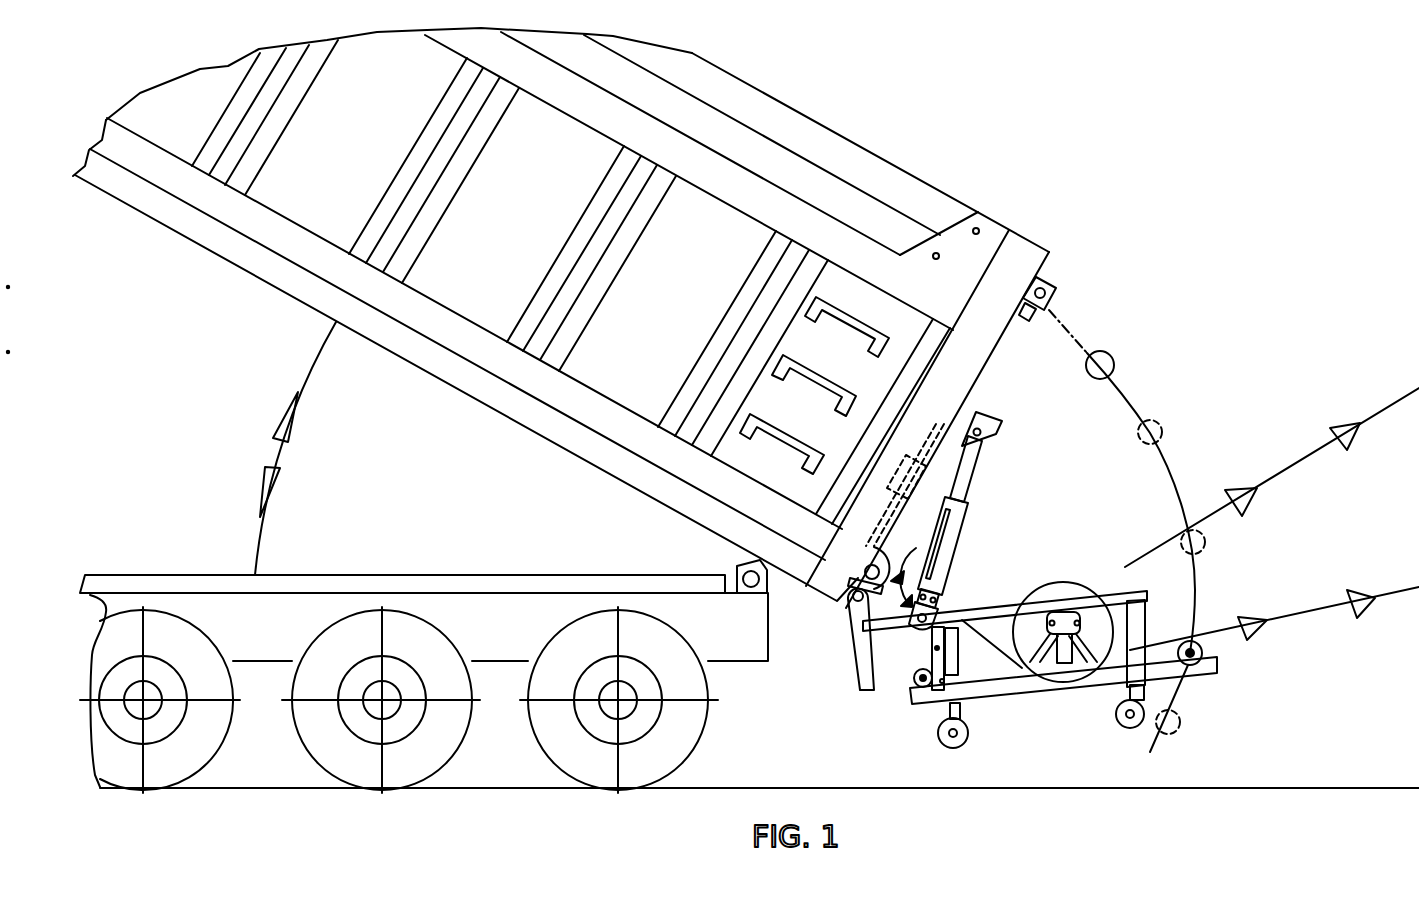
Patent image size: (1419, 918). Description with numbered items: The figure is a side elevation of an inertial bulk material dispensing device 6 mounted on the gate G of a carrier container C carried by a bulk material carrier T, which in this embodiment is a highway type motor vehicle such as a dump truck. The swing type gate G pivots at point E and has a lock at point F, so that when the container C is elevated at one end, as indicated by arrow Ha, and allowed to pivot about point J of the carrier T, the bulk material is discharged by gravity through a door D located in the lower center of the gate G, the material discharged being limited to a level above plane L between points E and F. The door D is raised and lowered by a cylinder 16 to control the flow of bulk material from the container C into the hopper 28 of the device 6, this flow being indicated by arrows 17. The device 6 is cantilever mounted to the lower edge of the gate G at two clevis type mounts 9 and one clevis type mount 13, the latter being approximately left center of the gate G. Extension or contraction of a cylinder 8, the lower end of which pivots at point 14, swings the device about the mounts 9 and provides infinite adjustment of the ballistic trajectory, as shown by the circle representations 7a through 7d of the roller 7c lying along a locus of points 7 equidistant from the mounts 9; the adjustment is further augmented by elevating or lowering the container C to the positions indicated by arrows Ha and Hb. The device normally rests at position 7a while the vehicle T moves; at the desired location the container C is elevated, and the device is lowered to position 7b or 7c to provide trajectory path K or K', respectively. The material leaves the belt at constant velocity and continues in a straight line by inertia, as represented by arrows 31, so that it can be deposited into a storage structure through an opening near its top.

The inertial bulk material dispensing device 6 is at (1014, 604).
The roller position circle representations 7 is at (1123, 531).
The roller position 7a is at (1113, 354).
The roller position 7b is at (1203, 550).
The roller 7c is at (1210, 657).
The roller position 7d is at (1180, 732).
The cylinder 8 is at (963, 538).
The clevis type mounts 9 is at (849, 603).
The clevis type mount 13 is at (988, 440).
The pivot point 14 is at (920, 636).
The cylinder 16 is at (965, 498).
The arrows 17 is at (911, 577).
The hopper 28 is at (983, 626).
The arrows 31 is at (1226, 490).
The carrier container C is at (477, 401).
The door D is at (943, 480).
The gate pivot point E is at (1050, 283).
The lock point F is at (871, 548).
The gate G is at (1000, 374).
The container pivot point J is at (742, 571).
The trajectory path K is at (1272, 477).
The trajectory path K' is at (1274, 618).
The plane L is at (836, 788).
The bulk material carrier T is at (740, 667).
The arrow Ha is at (293, 426).
The arrow Hb is at (268, 507).